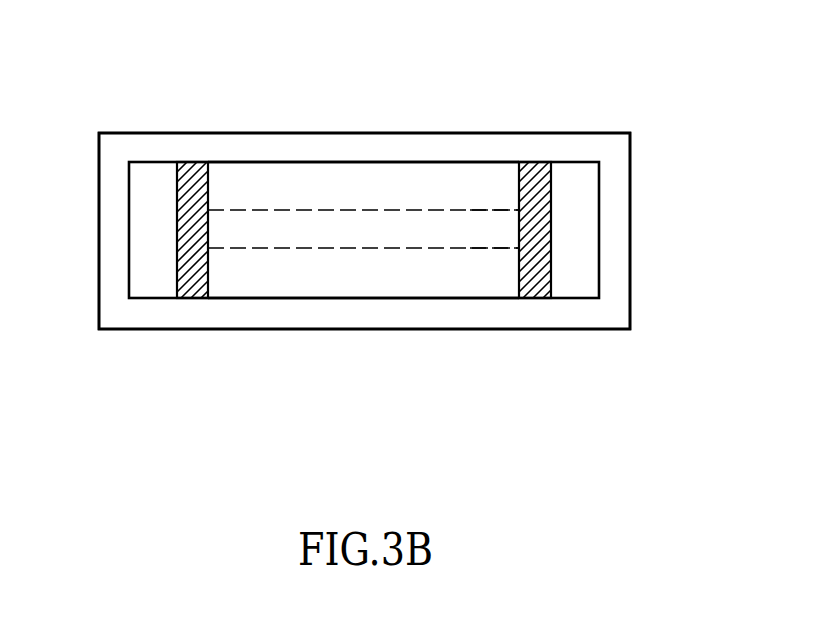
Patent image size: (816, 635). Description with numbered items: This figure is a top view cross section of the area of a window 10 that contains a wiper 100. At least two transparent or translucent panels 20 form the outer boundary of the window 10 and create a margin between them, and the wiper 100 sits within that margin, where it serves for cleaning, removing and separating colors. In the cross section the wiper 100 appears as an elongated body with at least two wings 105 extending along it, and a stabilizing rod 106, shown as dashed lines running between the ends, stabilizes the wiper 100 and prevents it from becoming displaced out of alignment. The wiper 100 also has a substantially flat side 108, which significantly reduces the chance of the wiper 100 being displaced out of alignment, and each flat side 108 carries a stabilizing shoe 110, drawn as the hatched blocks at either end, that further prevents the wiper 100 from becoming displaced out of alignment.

The window 10 is at (283, 340).
The transparent or translucent panels 20 is at (345, 140).
The wiper 100 is at (253, 188).
The wings 105 is at (454, 172).
The stabilizing rod 106 is at (462, 235).
The flat side 108 is at (495, 188).
The stabilizing shoe 110 is at (555, 203).